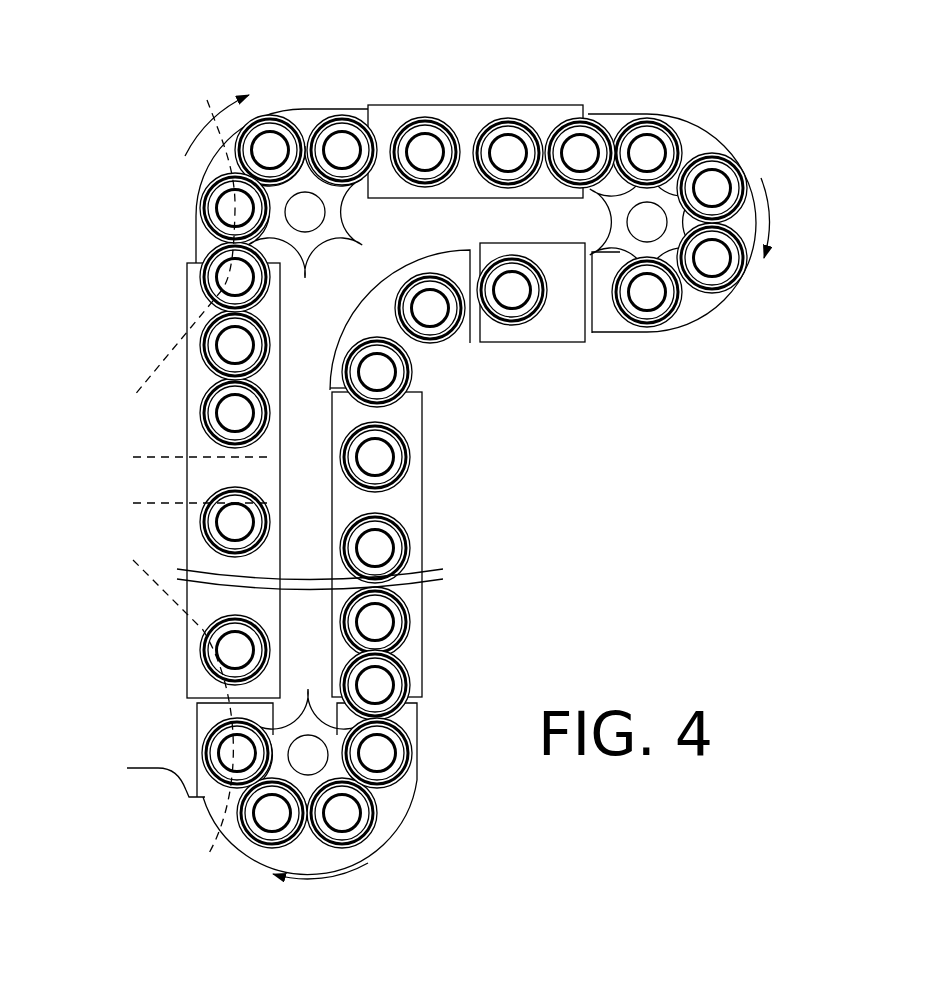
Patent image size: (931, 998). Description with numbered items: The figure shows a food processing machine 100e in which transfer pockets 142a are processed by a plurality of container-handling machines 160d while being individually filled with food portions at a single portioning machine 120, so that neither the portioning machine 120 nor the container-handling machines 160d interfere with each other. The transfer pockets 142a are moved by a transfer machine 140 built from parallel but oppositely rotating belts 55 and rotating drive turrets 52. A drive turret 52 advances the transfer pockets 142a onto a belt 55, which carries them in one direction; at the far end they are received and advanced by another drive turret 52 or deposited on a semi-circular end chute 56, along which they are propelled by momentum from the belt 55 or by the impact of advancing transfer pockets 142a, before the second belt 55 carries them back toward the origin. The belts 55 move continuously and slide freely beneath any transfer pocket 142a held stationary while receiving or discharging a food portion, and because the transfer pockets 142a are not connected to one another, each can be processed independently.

The food processing machine 100e is at (435, 451).
The container-handling machine 160d is at (187, 172).
The portioning machine 120 is at (702, 322).
The end chute 56 is at (440, 378).
The belt 55 is at (407, 105).
The transfer machine 140 is at (427, 517).
The drive turret 52 is at (307, 143).
The transfer pocket 142a is at (565, 128).